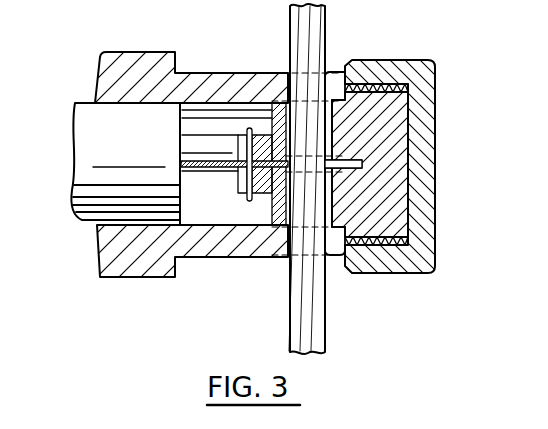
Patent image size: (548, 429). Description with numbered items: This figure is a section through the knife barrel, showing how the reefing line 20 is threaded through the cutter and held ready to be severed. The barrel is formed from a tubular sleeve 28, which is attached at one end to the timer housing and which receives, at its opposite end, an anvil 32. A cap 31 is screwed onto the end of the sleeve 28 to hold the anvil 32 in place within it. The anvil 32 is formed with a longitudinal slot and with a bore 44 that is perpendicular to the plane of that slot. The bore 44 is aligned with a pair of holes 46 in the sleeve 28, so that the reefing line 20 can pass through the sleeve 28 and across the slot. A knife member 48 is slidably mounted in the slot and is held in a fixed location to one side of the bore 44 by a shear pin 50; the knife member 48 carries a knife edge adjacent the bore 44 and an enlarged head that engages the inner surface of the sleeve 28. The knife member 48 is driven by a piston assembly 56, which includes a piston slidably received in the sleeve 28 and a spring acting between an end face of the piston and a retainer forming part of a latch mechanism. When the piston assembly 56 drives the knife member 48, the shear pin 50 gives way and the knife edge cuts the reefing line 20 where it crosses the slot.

The reefing line 20 is at (290, 311).
The tubular sleeve 28 is at (143, 278).
The cap 31 is at (395, 60).
The anvil 32 is at (408, 131).
The bore 44 is at (345, 72).
The holes 46 is at (288, 76).
The knife member 48 is at (215, 173).
The shear pin 50 is at (250, 203).
The piston assembly 56 is at (86, 227).